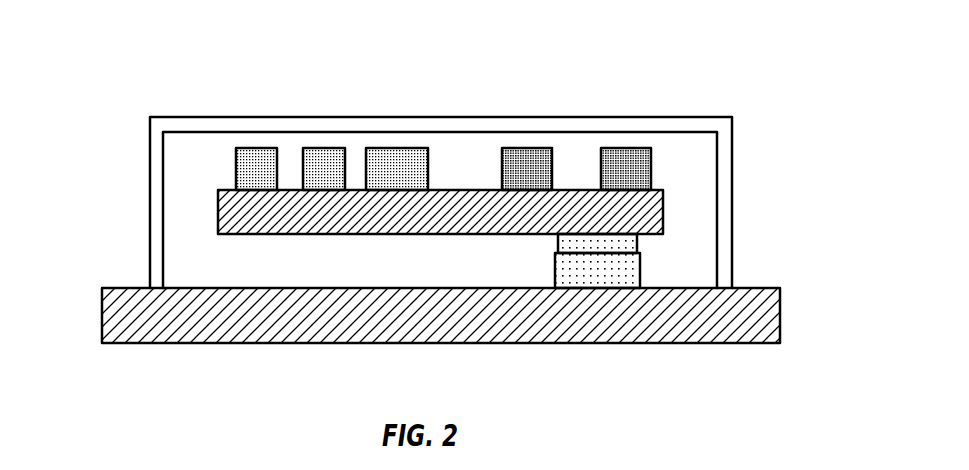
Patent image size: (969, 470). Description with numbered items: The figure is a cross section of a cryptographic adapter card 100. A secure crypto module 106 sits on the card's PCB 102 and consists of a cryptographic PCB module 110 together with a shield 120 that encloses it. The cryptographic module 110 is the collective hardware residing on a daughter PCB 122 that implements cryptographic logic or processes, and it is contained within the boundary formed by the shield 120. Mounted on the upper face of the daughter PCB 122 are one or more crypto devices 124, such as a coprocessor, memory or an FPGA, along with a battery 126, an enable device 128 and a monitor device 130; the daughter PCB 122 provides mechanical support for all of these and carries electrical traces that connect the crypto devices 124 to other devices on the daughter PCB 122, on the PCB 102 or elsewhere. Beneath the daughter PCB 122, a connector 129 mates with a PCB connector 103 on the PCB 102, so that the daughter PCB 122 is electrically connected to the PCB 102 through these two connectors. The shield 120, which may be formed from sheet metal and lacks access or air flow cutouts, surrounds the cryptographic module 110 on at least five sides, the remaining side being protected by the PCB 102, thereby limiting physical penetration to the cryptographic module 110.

The cryptographic adapter card 100 is at (731, 39).
The PCB 102 is at (762, 318).
The PCB connector 103 is at (579, 280).
The secure crypto module 106 is at (143, 106).
The cryptographic PCB module 110 is at (735, 96).
The shield 120 is at (725, 175).
The daughter PCB 122 is at (647, 218).
The crypto devices 124 is at (523, 162).
The battery 126 is at (252, 165).
The enable device 128 is at (403, 160).
The connector 129 is at (613, 245).
The monitor device 130 is at (318, 165).